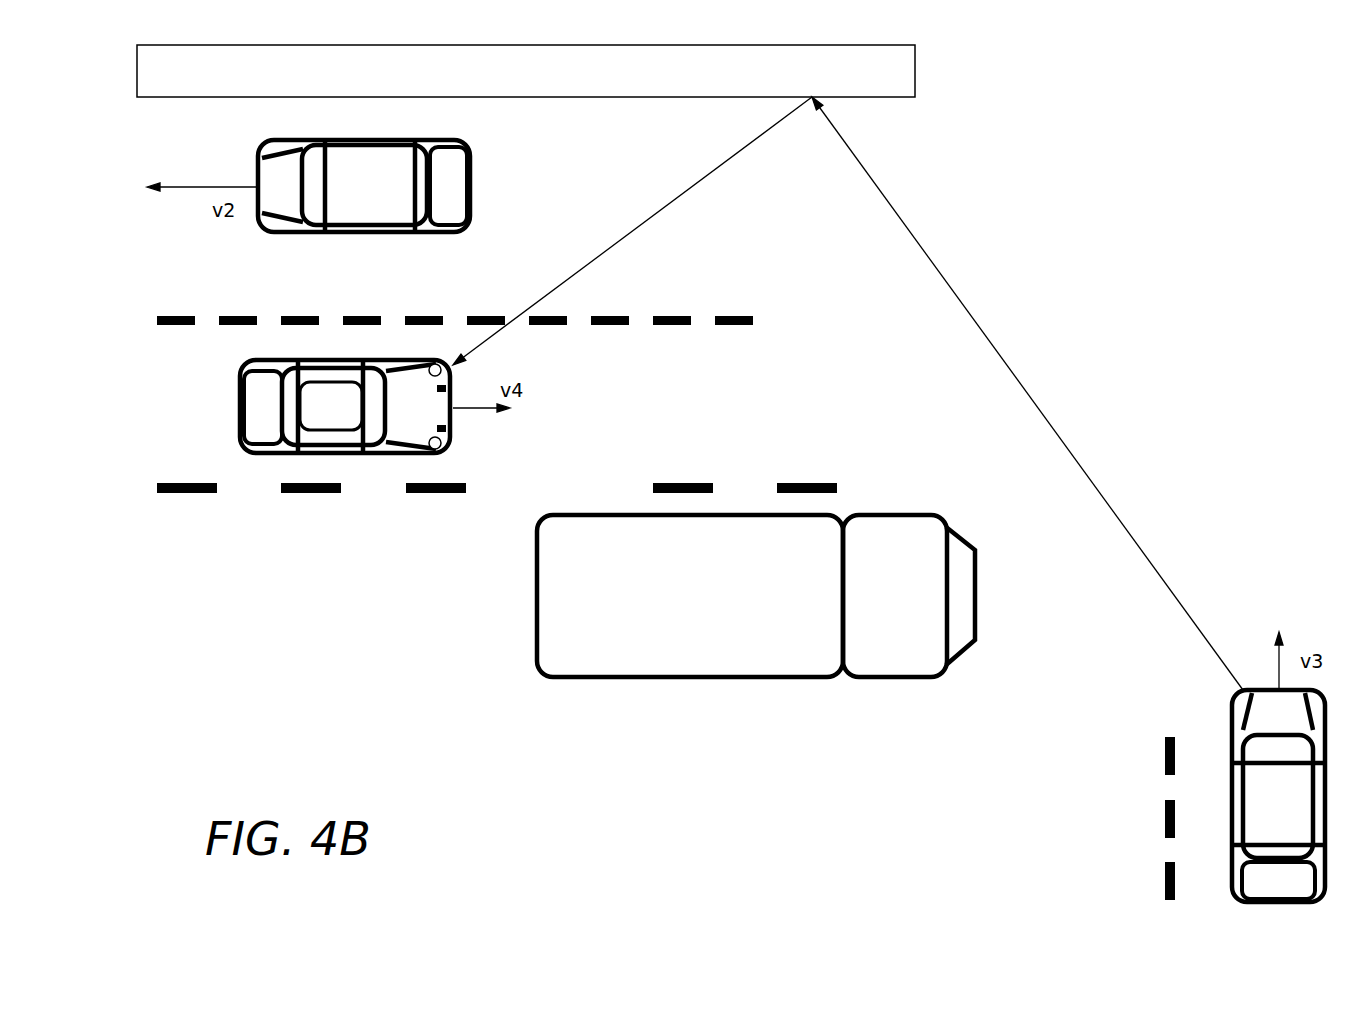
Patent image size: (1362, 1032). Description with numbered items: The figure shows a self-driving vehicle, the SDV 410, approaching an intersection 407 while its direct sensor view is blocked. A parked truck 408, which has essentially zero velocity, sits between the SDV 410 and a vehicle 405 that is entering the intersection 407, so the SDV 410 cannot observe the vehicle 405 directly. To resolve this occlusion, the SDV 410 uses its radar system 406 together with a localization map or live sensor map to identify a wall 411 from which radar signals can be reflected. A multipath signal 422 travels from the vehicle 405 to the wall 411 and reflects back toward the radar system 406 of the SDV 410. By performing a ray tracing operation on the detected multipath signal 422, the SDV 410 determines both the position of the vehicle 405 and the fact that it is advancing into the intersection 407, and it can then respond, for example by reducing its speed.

The wall 411 is at (526, 71).
The multipath signal 422 is at (848, 393).
The intersection 407 is at (1209, 589).
The radar system 406 is at (331, 406).
The SDV 410 is at (302, 395).
The parked truck 408 is at (756, 608).
The vehicle 405 is at (1238, 786).